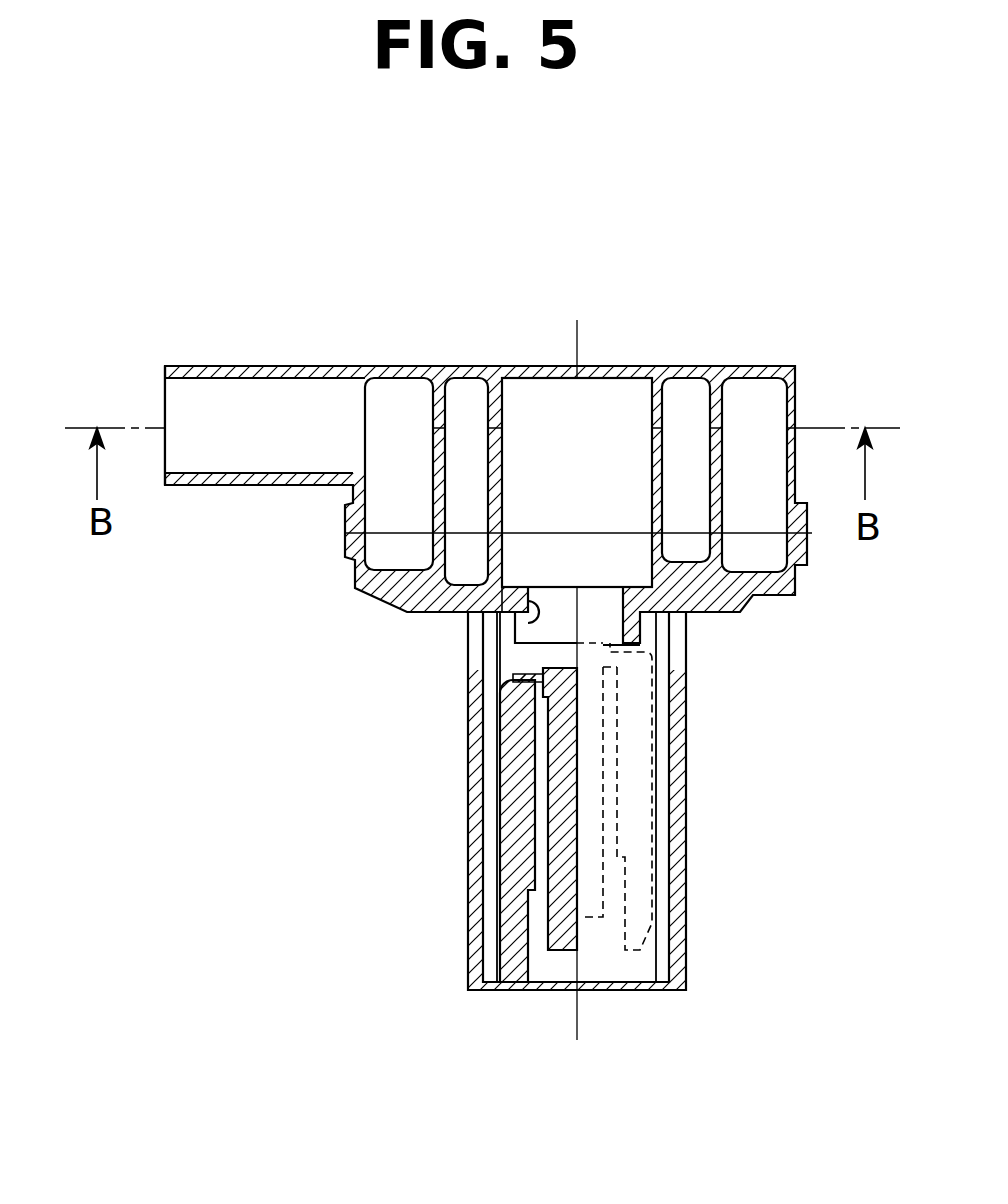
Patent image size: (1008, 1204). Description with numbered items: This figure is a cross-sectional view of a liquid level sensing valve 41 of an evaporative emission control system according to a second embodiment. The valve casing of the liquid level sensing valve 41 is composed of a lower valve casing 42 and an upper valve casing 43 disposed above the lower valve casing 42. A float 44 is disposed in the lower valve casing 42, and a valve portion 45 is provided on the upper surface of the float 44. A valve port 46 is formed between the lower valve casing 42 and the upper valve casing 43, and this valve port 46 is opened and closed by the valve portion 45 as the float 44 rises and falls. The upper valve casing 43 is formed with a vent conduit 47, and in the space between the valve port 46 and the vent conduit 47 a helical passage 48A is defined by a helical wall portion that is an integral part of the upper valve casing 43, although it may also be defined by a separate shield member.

The liquid level sensing valve 41 is at (706, 790).
The lower valve casing 42 is at (480, 806).
The upper valve casing 43 is at (606, 367).
The float 44 is at (508, 889).
The valve portion 45 is at (516, 687).
The valve port 46 is at (527, 616).
The vent conduit 47 is at (250, 480).
The helical passage 48A is at (681, 440).